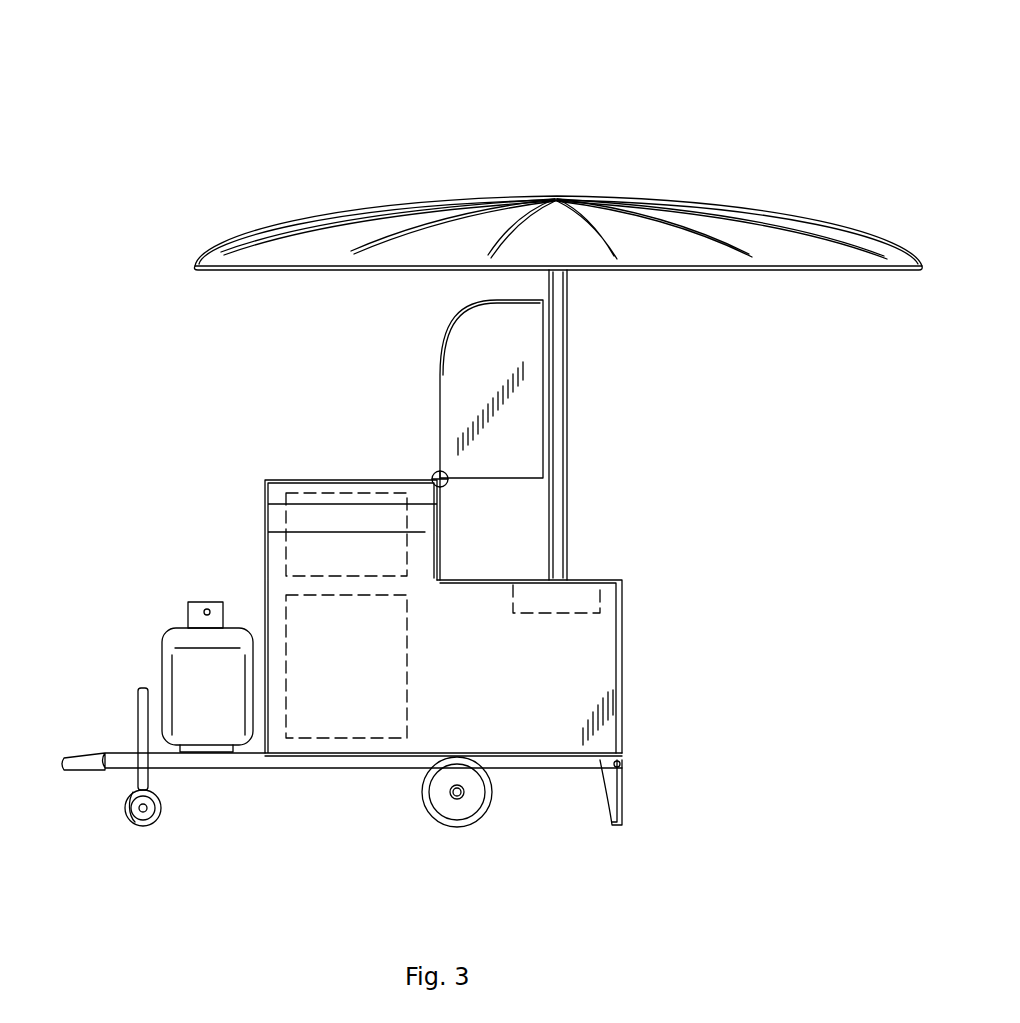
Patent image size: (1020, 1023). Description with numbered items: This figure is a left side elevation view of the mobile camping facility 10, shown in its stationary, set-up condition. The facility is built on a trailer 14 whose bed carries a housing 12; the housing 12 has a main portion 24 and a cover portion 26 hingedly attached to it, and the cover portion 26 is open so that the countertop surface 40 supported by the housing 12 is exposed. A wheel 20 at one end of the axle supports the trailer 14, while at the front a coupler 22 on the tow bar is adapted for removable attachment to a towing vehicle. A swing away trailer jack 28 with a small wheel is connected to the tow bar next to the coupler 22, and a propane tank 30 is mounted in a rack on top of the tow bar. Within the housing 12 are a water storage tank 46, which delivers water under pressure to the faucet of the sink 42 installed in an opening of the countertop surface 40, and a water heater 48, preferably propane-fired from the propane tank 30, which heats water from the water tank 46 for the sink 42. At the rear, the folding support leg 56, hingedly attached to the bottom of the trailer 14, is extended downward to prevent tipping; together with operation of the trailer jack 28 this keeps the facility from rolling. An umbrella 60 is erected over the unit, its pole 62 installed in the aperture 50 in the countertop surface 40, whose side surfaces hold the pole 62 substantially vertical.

The mobile camping facility 10 is at (489, 72).
The housing 12 is at (166, 257).
The trailer 14 is at (597, 892).
The wheel 20 is at (470, 798).
The coupler 22 is at (64, 756).
The main portion 24 is at (352, 478).
The cover portion 26 is at (445, 342).
The swing away trailer jack 28 is at (133, 782).
The propane tank 30 is at (175, 628).
The countertop surface 40 is at (585, 580).
The sink 42 is at (546, 616).
The water storage tank 46 is at (290, 510).
The water heater 48 is at (307, 740).
The aperture 50 is at (575, 568).
The folding support leg 56 is at (617, 786).
The umbrella 60 is at (657, 142).
The pole 62 is at (558, 402).